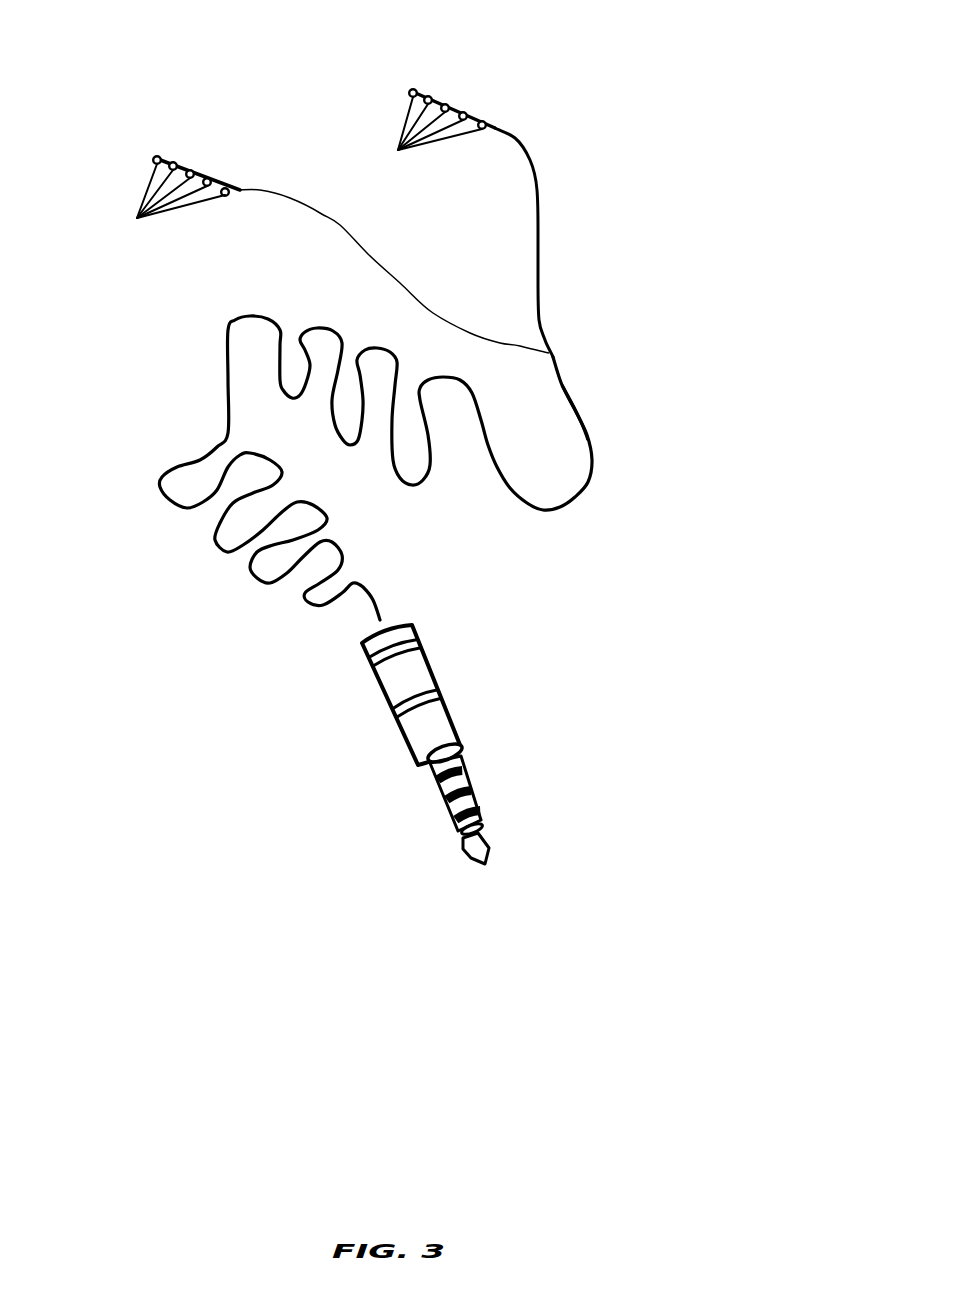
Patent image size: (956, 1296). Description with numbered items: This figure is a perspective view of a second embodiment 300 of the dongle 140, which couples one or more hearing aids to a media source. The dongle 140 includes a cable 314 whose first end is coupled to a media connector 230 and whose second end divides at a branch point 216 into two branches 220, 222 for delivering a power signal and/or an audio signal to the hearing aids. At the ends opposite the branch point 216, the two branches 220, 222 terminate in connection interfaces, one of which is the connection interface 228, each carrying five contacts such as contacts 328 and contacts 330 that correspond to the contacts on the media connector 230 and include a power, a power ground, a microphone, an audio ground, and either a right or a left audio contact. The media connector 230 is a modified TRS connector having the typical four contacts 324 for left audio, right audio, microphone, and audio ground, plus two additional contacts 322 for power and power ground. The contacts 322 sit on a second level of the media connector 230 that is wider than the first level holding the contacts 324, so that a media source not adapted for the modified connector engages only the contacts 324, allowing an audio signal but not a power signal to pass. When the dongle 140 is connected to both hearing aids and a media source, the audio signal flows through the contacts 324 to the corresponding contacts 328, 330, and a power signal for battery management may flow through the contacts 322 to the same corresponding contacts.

The second embodiment of dongle 300 is at (263, 52).
The dongle 140 is at (168, 386).
The branch point 216 is at (557, 365).
The cable 314 is at (583, 427).
The branch 220 is at (533, 178).
The branch 222 is at (320, 217).
The connection interface 228 is at (187, 167).
The contacts 328 is at (137, 218).
The media connector 230 is at (440, 95).
The contacts 330 is at (398, 150).
The contacts 322 is at (397, 722).
The contacts 324 is at (490, 850).